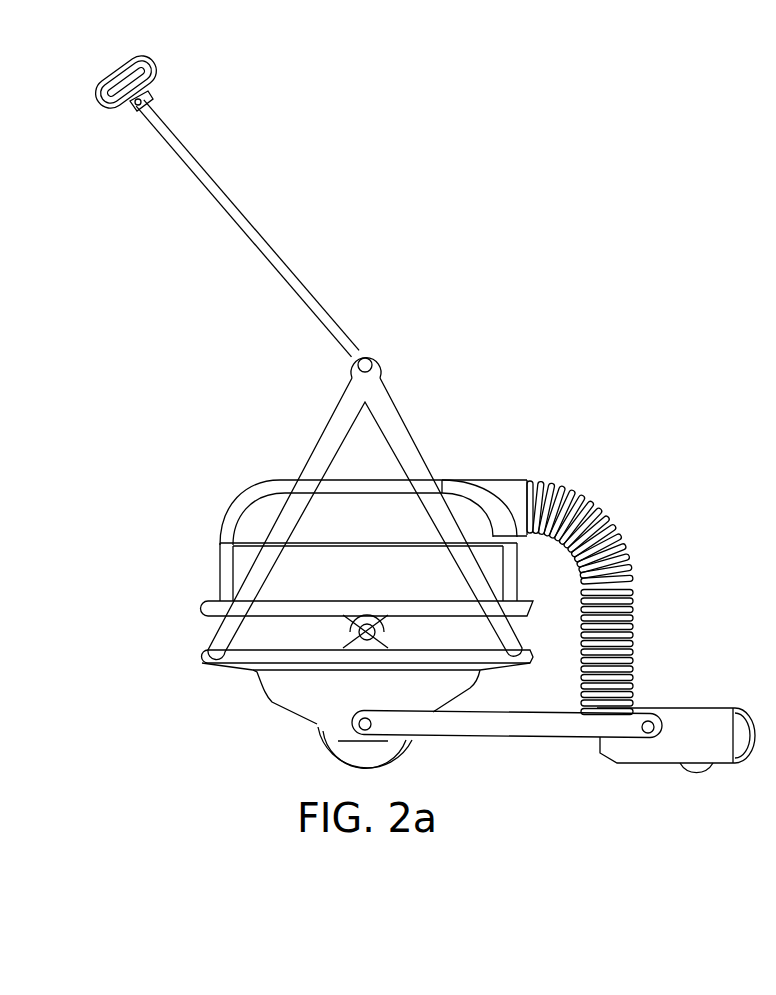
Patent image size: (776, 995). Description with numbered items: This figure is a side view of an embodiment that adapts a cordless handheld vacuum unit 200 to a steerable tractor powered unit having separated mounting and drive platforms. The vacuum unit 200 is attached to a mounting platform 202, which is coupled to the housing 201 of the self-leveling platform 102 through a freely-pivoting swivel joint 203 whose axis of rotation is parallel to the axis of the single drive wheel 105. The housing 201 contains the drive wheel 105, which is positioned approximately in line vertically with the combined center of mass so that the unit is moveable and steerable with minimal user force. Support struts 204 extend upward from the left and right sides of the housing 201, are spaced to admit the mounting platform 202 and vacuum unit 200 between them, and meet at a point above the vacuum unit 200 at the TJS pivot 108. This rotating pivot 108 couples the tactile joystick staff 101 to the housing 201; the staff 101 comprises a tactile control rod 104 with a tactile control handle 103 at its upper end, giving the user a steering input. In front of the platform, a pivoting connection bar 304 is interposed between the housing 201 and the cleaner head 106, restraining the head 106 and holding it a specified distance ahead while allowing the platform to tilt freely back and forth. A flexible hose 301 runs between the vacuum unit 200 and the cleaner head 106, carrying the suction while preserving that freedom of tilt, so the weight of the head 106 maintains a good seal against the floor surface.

The tactile joystick staff 101 is at (290, 175).
The self-leveling platform 102 is at (228, 702).
The tactile control handle 103 is at (112, 80).
The tactile control rod 104 is at (285, 265).
The drive wheel 105 is at (410, 750).
The cleaner head 106 is at (700, 707).
The TJS pivot 108 is at (382, 367).
The handheld vacuum unit 200 is at (473, 443).
The housing 201 is at (291, 710).
The mounting platform 202 is at (210, 619).
The swivel joint 203 is at (368, 624).
The support struts 204 is at (328, 438).
The flexible hose 301 is at (630, 612).
The pivoting connection bar 304 is at (558, 738).